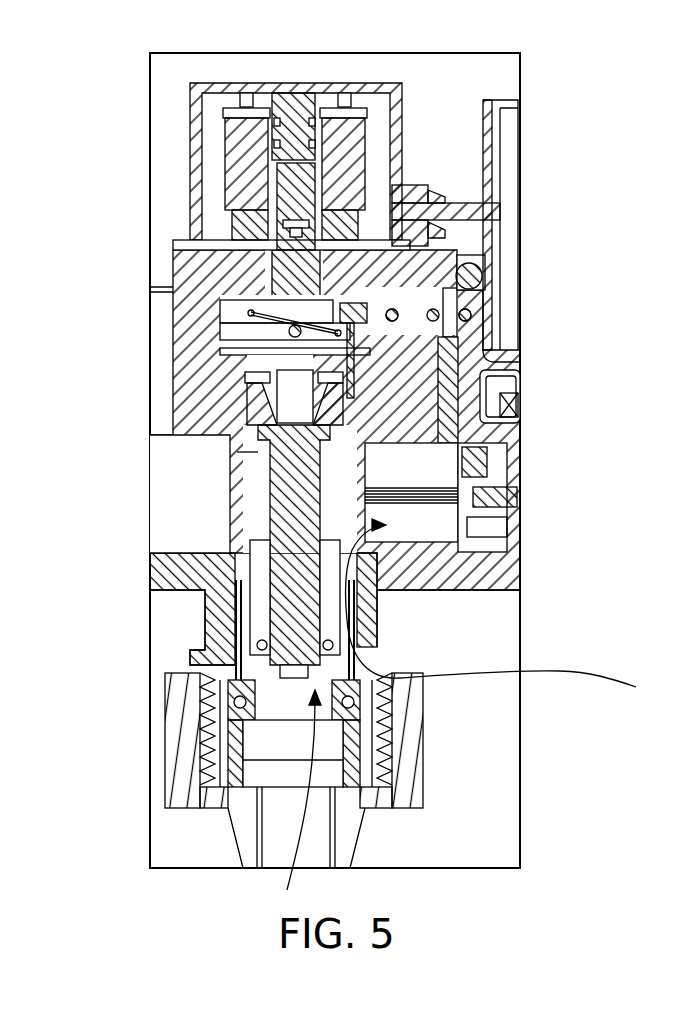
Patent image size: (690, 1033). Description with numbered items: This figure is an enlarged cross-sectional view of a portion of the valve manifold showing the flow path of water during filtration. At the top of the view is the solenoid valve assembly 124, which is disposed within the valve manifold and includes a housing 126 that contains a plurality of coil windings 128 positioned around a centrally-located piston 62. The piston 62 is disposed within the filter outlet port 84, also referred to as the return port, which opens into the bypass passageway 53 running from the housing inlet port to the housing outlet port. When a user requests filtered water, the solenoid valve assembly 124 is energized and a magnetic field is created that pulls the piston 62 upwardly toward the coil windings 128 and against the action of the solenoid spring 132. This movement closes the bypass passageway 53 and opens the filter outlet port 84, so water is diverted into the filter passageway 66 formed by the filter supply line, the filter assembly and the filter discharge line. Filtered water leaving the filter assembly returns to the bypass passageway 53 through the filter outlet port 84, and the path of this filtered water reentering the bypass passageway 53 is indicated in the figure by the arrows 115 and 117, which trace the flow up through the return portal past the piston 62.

The solenoid valve assembly 124 is at (382, 68).
The housing 126 is at (192, 84).
The coil windings 128 is at (252, 170).
The solenoid spring 132 is at (217, 312).
The piston 62 is at (237, 452).
The bypass passageway 53 is at (197, 520).
The filter outlet port 84 is at (212, 600).
The arrow 117 is at (510, 609).
The arrow 115 is at (393, 748).
The filter passageway 66 is at (350, 850).